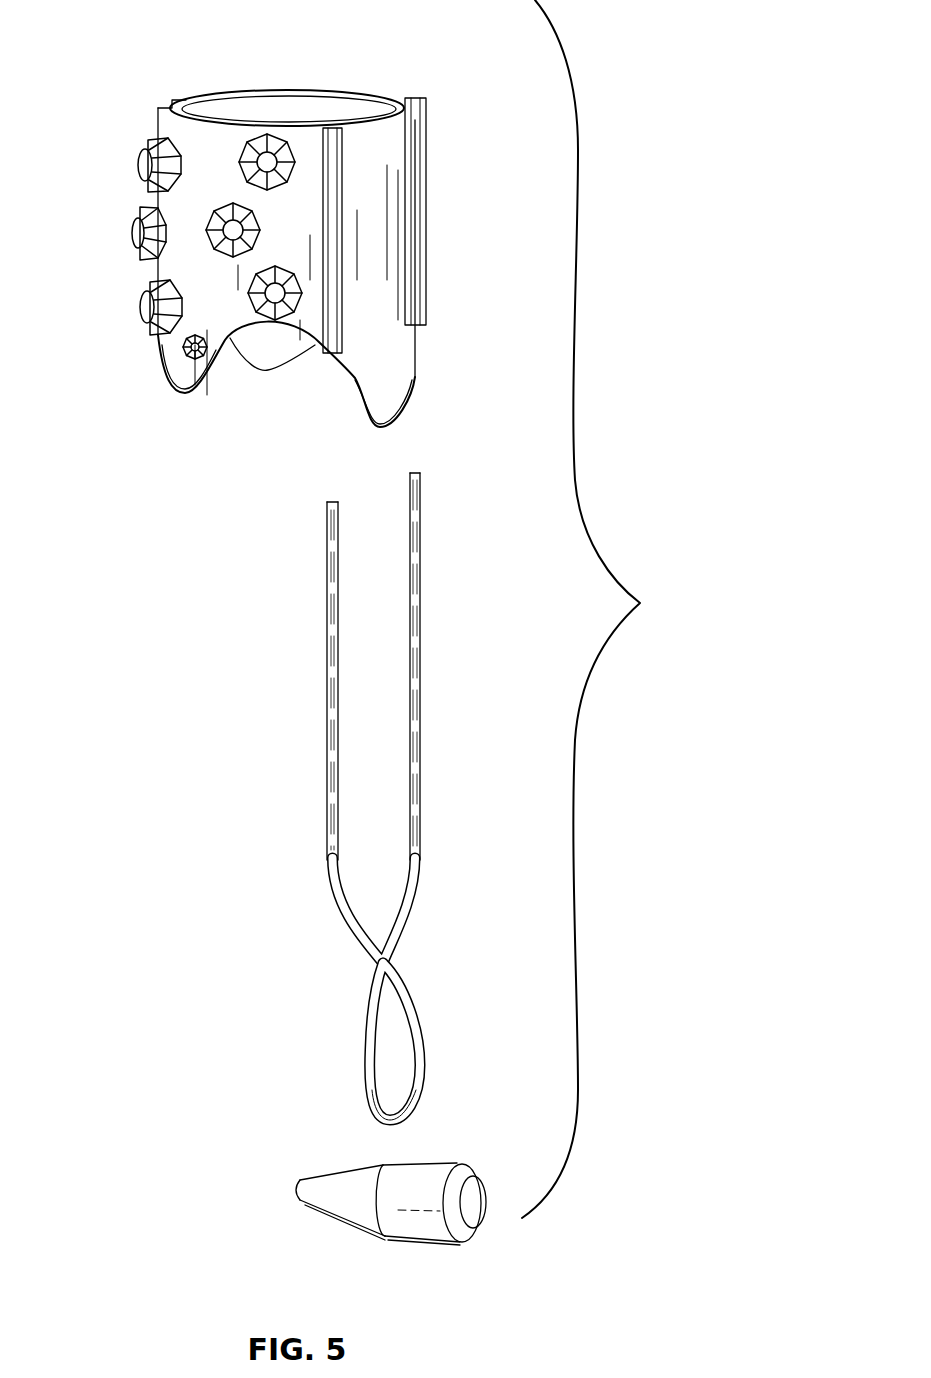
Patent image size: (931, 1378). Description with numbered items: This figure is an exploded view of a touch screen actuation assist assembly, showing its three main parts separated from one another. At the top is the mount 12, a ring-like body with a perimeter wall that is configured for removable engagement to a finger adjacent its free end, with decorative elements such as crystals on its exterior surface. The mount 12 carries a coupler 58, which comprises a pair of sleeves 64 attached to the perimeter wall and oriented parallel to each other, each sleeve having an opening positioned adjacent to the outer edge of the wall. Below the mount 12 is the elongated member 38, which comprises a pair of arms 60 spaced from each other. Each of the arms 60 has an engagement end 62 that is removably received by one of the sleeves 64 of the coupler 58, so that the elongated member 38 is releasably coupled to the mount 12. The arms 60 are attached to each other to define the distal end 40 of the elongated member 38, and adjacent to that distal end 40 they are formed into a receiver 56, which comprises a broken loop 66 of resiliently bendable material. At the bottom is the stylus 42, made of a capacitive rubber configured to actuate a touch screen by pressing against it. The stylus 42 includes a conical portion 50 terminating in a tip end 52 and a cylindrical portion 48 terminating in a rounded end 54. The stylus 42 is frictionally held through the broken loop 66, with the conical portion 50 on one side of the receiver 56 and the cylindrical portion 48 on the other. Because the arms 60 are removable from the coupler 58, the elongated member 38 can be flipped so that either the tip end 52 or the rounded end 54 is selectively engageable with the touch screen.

The mount 12 is at (283, 258).
The coupler 58 is at (434, 235).
The sleeves 64 is at (413, 152).
The elongated member 38 is at (360, 780).
The arms 60 is at (327, 680).
The engagement end 62 is at (333, 500).
The receiver 56 is at (360, 1036).
The broken loop 66 is at (400, 1013).
The distal end 40 is at (380, 1118).
The conical portion 50 is at (387, 1243).
The tip end 52 is at (295, 1188).
The stylus 42 is at (405, 1228).
The cylindrical portion 48 is at (450, 1258).
The rounded end 54 is at (475, 1218).